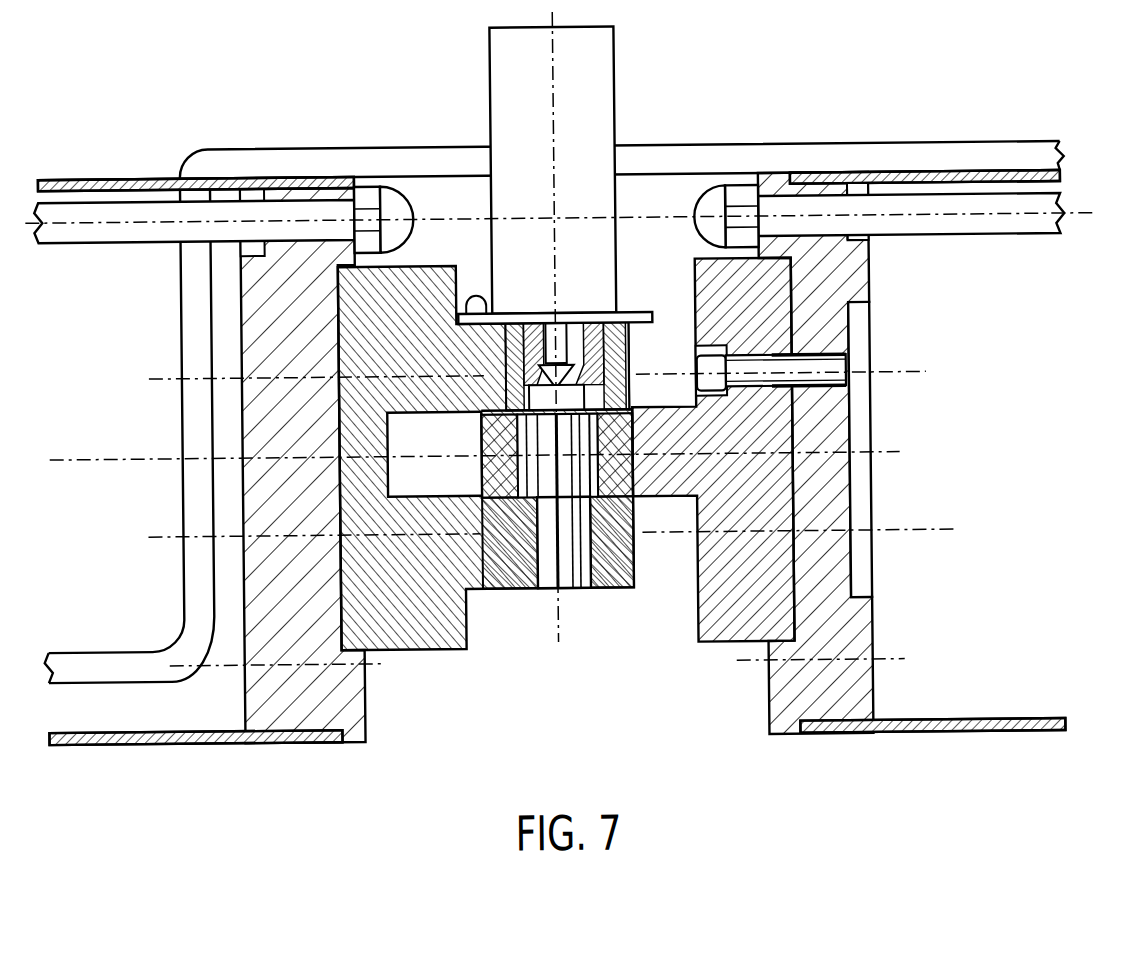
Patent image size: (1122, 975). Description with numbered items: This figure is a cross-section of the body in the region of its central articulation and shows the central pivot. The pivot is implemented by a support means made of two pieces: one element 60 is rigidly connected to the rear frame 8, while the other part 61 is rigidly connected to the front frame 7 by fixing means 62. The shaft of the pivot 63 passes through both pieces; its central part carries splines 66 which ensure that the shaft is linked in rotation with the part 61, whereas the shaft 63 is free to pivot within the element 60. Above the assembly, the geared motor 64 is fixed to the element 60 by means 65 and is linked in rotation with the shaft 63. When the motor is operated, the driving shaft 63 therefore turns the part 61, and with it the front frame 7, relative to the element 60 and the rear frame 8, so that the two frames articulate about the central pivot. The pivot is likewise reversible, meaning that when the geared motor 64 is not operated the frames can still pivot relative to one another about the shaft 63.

The front frame 7 is at (790, 717).
The rear frame 8 is at (363, 735).
The element of the support means 60 is at (424, 632).
The part of the support means 61 is at (707, 620).
The fixing means 62 is at (850, 365).
The shaft of the pivot 63 is at (552, 575).
The geared motor 64 is at (588, 63).
The fixing means of the geared motor 65 is at (478, 296).
The splines 66 is at (600, 470).